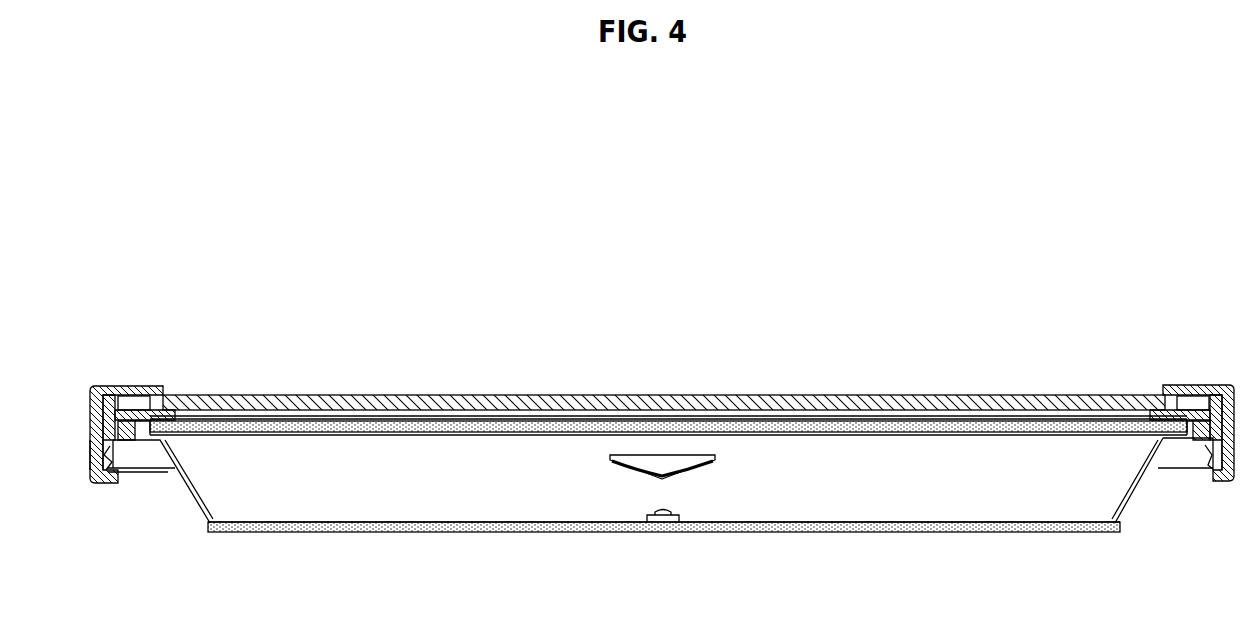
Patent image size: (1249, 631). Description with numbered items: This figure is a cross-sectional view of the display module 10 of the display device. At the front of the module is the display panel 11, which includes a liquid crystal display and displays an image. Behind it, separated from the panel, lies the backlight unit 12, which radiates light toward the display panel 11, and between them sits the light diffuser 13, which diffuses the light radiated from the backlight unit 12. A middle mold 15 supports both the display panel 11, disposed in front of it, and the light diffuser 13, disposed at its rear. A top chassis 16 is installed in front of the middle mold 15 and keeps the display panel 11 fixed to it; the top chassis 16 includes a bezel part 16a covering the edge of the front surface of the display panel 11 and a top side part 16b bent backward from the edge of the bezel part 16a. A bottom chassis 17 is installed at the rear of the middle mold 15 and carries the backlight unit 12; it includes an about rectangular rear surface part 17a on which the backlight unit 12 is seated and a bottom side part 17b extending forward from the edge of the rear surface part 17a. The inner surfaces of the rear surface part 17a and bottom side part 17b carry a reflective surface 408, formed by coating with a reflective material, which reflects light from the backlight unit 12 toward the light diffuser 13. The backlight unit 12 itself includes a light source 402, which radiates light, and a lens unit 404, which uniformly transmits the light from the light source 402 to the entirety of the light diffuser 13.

The display module 10 is at (310, 286).
The display panel 11 is at (433, 391).
The backlight unit 12 is at (606, 446).
The light diffuser 13 is at (852, 440).
The middle mold 15 is at (131, 404).
The top chassis 16 is at (94, 413).
The bezel part 16a is at (97, 384).
The top side part 16b is at (90, 442).
The bottom chassis 17 is at (633, 507).
The rear surface part 17a is at (343, 533).
The bottom side part 17b is at (178, 486).
The light source 402 is at (676, 512).
The lens unit 404 is at (725, 458).
The reflective surface 408 is at (906, 522).